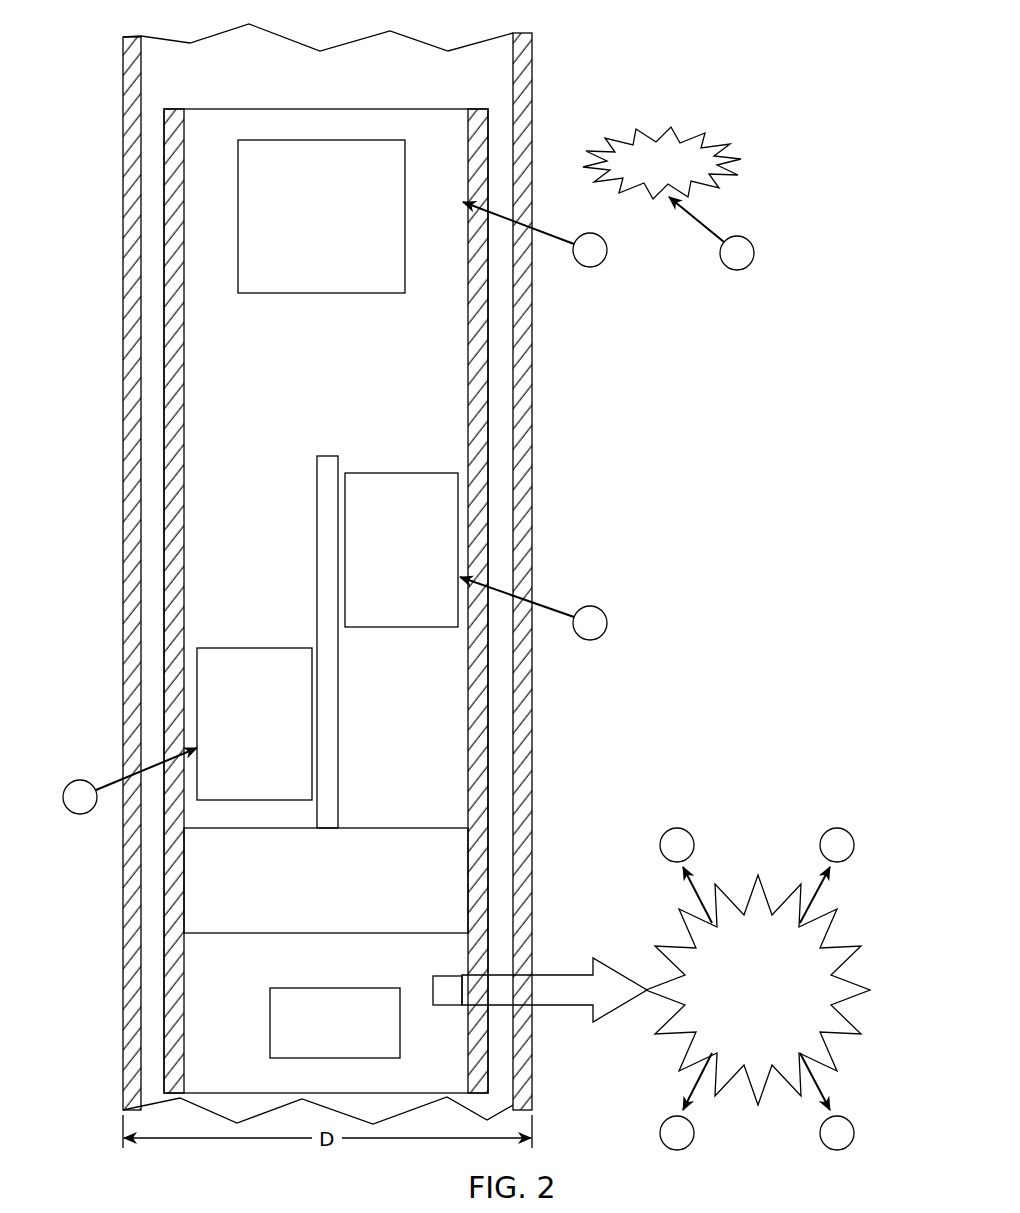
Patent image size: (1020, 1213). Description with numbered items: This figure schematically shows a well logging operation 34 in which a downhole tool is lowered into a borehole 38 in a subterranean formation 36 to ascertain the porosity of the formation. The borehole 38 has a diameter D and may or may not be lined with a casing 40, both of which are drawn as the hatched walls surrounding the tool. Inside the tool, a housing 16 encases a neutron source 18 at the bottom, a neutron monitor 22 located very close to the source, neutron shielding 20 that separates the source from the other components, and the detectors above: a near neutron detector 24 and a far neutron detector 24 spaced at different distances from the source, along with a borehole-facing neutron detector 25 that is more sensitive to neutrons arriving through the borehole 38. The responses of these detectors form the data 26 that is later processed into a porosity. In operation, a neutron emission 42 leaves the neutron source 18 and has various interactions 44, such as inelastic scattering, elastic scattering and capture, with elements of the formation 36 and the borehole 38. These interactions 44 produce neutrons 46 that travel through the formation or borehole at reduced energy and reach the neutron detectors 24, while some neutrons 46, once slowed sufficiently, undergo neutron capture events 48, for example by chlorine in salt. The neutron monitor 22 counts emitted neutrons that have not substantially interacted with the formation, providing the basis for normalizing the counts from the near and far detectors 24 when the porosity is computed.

The housing 16 is at (489, 192).
The neutron source 18 is at (350, 988).
The neutron shielding 20 is at (327, 456).
The neutron monitor 22 is at (455, 976).
The neutron detector 24 is at (458, 523).
The borehole-facing neutron detector 25 is at (197, 700).
The data 26 is at (238, 152).
The well logging operation 34 is at (657, 72).
The subterranean formation 36 is at (631, 42).
The borehole 38 is at (280, 30).
The casing 40 is at (526, 127).
The neutron emission 42 is at (600, 963).
The interactions 44 is at (727, 890).
The neutrons 46 is at (596, 234).
The neutron capture events 48 is at (667, 131).